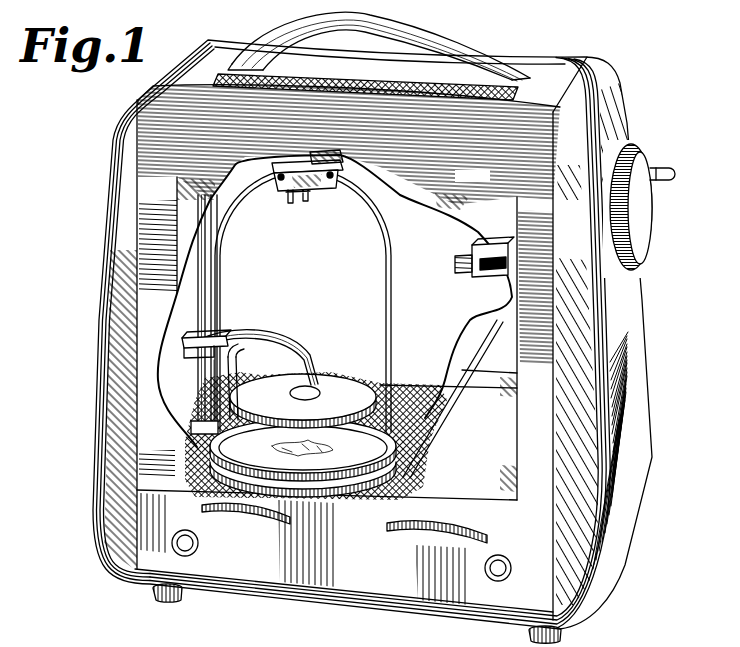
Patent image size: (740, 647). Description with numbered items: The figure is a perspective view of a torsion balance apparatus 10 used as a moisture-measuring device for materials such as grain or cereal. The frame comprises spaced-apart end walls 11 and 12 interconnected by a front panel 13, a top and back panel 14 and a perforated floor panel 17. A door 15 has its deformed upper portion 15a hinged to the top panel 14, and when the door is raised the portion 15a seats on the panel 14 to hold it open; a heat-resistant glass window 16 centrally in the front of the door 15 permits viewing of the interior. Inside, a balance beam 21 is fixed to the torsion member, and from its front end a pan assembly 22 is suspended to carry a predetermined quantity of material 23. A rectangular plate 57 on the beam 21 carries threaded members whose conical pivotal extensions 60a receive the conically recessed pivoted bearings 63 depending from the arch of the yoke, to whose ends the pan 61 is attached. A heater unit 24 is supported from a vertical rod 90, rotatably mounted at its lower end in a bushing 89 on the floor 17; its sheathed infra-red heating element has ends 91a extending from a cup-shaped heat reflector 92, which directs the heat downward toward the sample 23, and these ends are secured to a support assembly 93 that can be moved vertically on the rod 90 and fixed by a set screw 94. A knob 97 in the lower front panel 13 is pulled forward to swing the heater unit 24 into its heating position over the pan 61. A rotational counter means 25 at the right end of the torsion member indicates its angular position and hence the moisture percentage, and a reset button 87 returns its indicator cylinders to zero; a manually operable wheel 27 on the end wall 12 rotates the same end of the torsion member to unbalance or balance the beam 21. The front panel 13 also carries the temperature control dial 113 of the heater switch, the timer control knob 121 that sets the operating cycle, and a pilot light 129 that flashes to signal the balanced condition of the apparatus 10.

The torsion balance apparatus 10 is at (610, 74).
The end wall 11 is at (110, 283).
The end wall 12 is at (637, 336).
The front panel 13 is at (248, 583).
The top and back panel 14 is at (582, 48).
The door 15 is at (486, 181).
The deformed upper portion 15a is at (163, 104).
The window 16 is at (503, 363).
The perforated floor panel 17 is at (415, 418).
The balance beam 21 is at (295, 199).
The pan assembly 22 is at (392, 306).
The material 23 is at (320, 451).
The heater unit 24 is at (252, 312).
The counter means 25 is at (482, 246).
The manually operable wheel 27 is at (644, 212).
The rectangular plate 57 is at (282, 186).
The conical pivotal extensions 60a is at (362, 203).
The pan 61 is at (343, 478).
The pivoted bearings 63 is at (276, 168).
The reset button 87 is at (460, 256).
The bushing 89 is at (194, 424).
The vertical rod 90 is at (198, 303).
The ends of heating element 91a is at (297, 348).
The heat reflector 92 is at (350, 386).
The support assembly 93 is at (188, 340).
The set screw 94 is at (198, 378).
The knob 97 is at (185, 541).
The temperature control dial 113 is at (256, 522).
The control knob 121 is at (425, 547).
The pilot light 129 is at (505, 582).